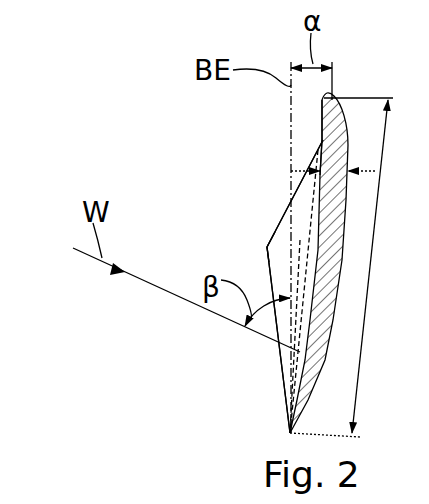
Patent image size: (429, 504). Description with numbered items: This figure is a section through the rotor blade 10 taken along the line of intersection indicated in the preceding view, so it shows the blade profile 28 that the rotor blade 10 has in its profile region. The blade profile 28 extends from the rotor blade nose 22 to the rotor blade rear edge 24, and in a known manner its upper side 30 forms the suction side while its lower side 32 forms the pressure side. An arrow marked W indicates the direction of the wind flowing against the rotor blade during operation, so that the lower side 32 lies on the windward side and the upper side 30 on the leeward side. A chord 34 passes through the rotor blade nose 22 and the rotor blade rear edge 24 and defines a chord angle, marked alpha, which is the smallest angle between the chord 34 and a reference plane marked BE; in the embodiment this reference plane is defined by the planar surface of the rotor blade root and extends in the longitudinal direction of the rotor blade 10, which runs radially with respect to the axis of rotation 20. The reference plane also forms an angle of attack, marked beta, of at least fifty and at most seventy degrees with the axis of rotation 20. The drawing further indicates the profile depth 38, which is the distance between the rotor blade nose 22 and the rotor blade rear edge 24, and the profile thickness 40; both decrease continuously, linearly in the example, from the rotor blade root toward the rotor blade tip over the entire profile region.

The rotor blade 10 is at (258, 238).
The axis of rotation 20 is at (134, 276).
The rotor blade nose 22 is at (295, 192).
The rotor blade rear edge 24 is at (282, 386).
The blade profile 28 is at (321, 140).
The upper side 30 is at (323, 363).
The lower side 32 is at (267, 254).
The chord 34 is at (312, 204).
The profile depth 38 is at (357, 402).
The profile thickness 40 is at (365, 170).